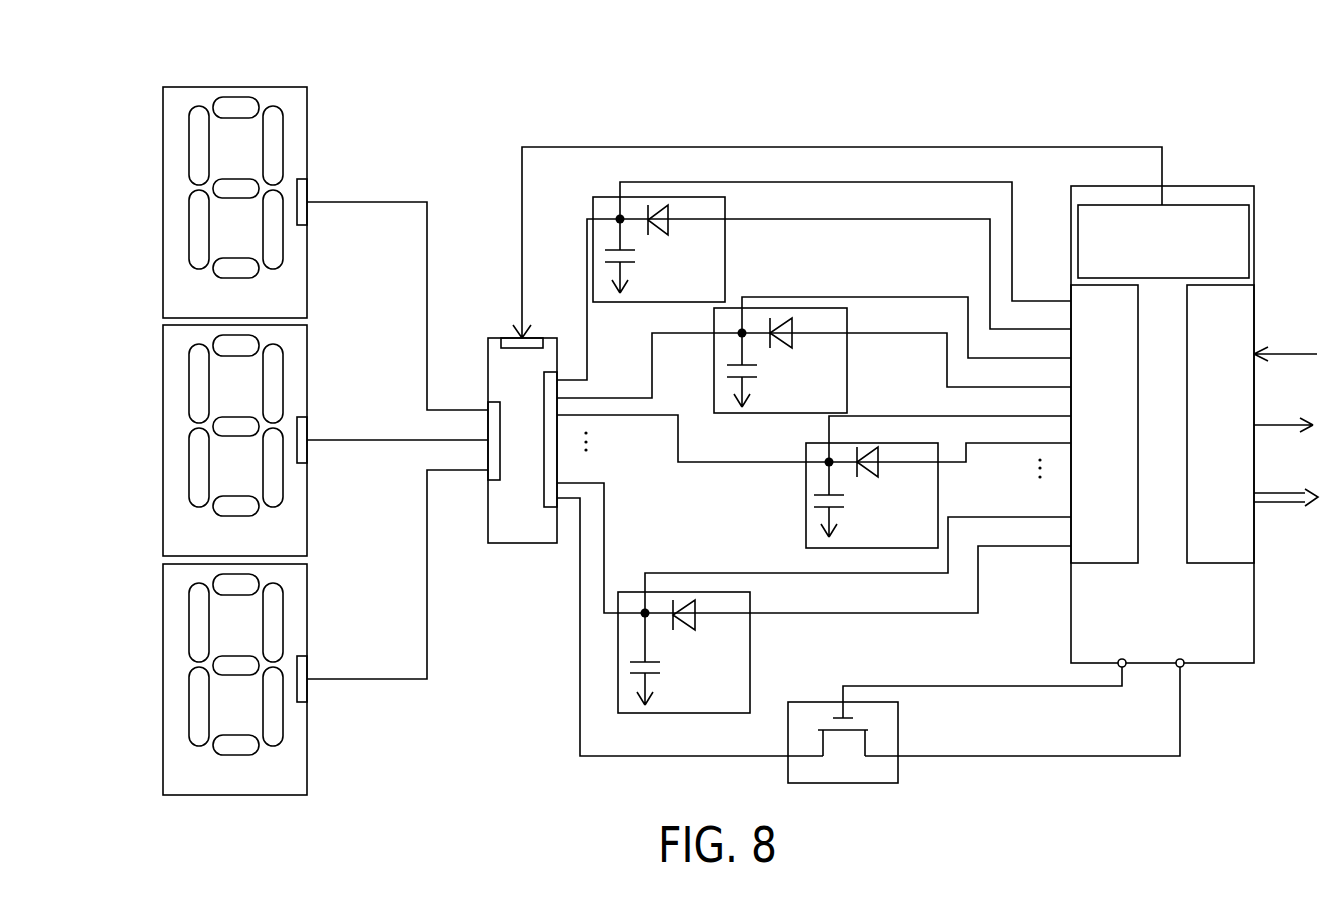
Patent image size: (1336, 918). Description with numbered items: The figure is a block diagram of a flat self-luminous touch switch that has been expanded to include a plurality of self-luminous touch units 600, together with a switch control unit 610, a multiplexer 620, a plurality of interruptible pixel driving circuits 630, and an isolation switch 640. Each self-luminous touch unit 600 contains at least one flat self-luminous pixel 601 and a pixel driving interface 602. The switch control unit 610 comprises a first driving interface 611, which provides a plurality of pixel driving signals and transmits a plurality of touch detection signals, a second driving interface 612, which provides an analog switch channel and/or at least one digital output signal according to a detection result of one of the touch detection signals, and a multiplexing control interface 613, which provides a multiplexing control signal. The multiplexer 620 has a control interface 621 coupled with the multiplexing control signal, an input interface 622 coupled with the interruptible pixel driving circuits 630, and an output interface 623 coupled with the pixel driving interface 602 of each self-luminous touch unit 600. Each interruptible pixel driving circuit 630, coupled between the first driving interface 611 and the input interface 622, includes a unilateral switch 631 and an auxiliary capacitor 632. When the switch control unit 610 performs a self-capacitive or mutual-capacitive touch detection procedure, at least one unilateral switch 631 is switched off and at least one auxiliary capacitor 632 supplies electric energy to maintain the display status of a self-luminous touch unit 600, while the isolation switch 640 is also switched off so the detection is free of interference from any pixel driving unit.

The self-luminous touch unit 600 is at (307, 112).
The flat self-luminous pixel 601 is at (190, 145).
The pixel driving interface 602 is at (303, 190).
The switch control unit 610 is at (1230, 186).
The first driving interface 611 is at (1095, 563).
The second driving interface 612 is at (1225, 563).
The multiplexing control interface 613 is at (1185, 205).
The multiplexer 620 is at (488, 357).
The control interface 621 is at (533, 342).
The input interface 622 is at (552, 507).
The output interface 623 is at (495, 477).
The interruptible pixel driving circuit 630 is at (680, 197).
The unilateral switch 631 is at (653, 208).
The auxiliary capacitor 632 is at (636, 257).
The isolation switch 640 is at (817, 702).